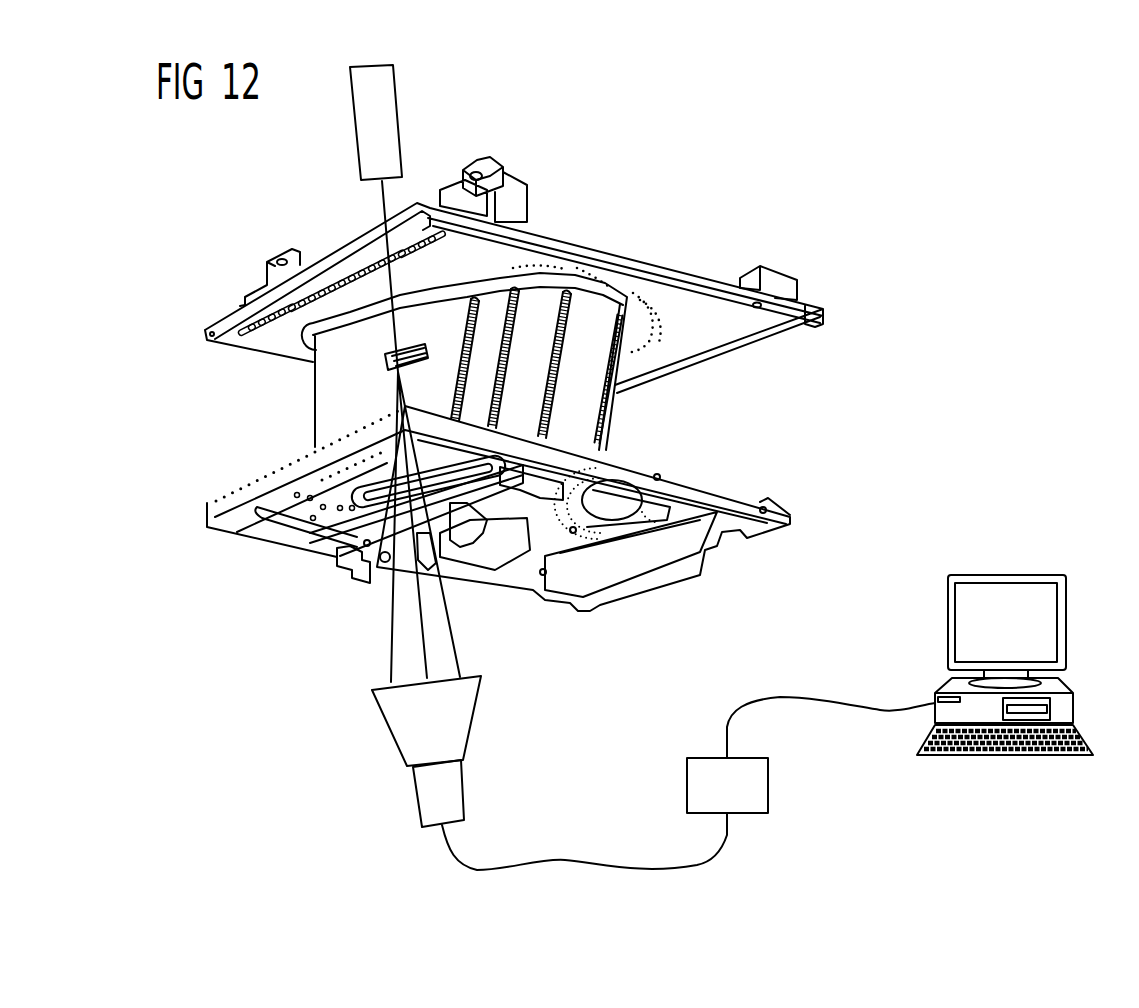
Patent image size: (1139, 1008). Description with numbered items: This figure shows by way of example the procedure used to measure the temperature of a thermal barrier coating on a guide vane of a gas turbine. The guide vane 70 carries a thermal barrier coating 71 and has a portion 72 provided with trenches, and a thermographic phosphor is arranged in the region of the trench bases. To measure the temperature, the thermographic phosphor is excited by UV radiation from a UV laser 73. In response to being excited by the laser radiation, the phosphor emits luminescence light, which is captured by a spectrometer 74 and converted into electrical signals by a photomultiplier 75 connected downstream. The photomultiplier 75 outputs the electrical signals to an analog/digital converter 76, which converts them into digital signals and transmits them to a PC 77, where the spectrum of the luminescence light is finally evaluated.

The guide vane 70 is at (514, 378).
The thermal barrier coating 71 is at (314, 408).
The portion provided with trenches 72 is at (384, 362).
The radiation source 73 is at (400, 122).
The spectrometer 74 is at (398, 719).
The photomultiplier 75 is at (427, 801).
The analog/digital converter 76 is at (770, 787).
The PC 77 is at (1073, 708).